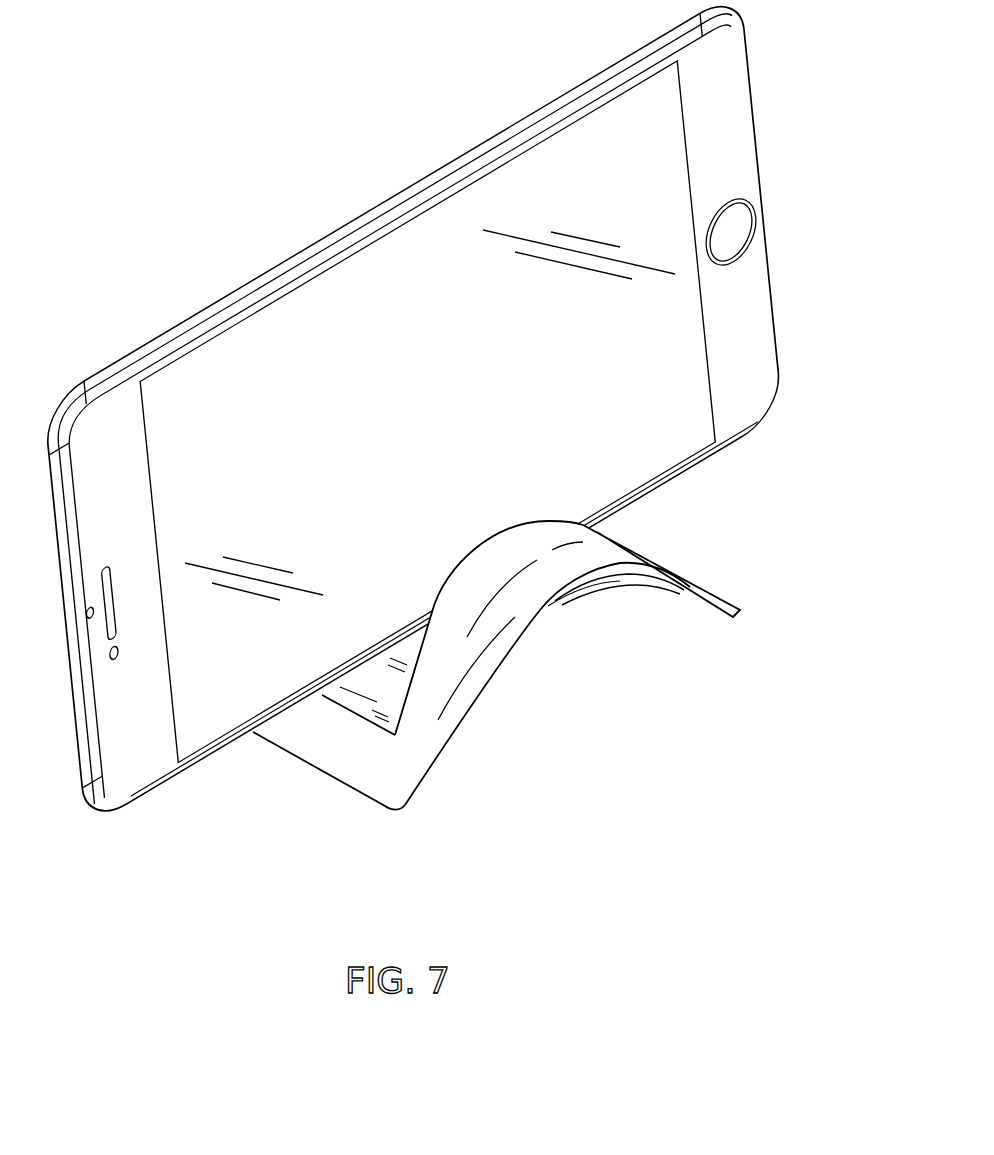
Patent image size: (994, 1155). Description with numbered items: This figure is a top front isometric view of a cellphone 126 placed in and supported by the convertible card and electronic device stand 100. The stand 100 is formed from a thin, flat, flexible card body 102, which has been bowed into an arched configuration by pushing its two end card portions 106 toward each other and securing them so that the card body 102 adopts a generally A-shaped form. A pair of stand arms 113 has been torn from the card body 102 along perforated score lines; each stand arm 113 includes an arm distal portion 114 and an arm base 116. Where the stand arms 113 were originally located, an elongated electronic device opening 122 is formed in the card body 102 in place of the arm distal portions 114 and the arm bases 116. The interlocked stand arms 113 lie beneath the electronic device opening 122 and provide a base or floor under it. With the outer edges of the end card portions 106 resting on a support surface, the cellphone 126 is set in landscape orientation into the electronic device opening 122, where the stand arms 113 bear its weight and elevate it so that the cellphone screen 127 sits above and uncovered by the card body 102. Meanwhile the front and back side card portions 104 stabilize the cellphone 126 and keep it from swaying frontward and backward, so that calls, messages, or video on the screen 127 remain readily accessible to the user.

The convertible card and electronic device stand 100 is at (521, 659).
The card body 102 is at (340, 796).
The side card portion 104 is at (518, 548).
The end card portion 106 is at (736, 604).
The stand arm 113 is at (603, 589).
The arm distal portion 114 is at (562, 602).
The arm base 116 is at (638, 587).
The electronic device opening 122 is at (360, 676).
The cellphone 126 is at (446, 414).
The cellphone screen 127 is at (342, 228).